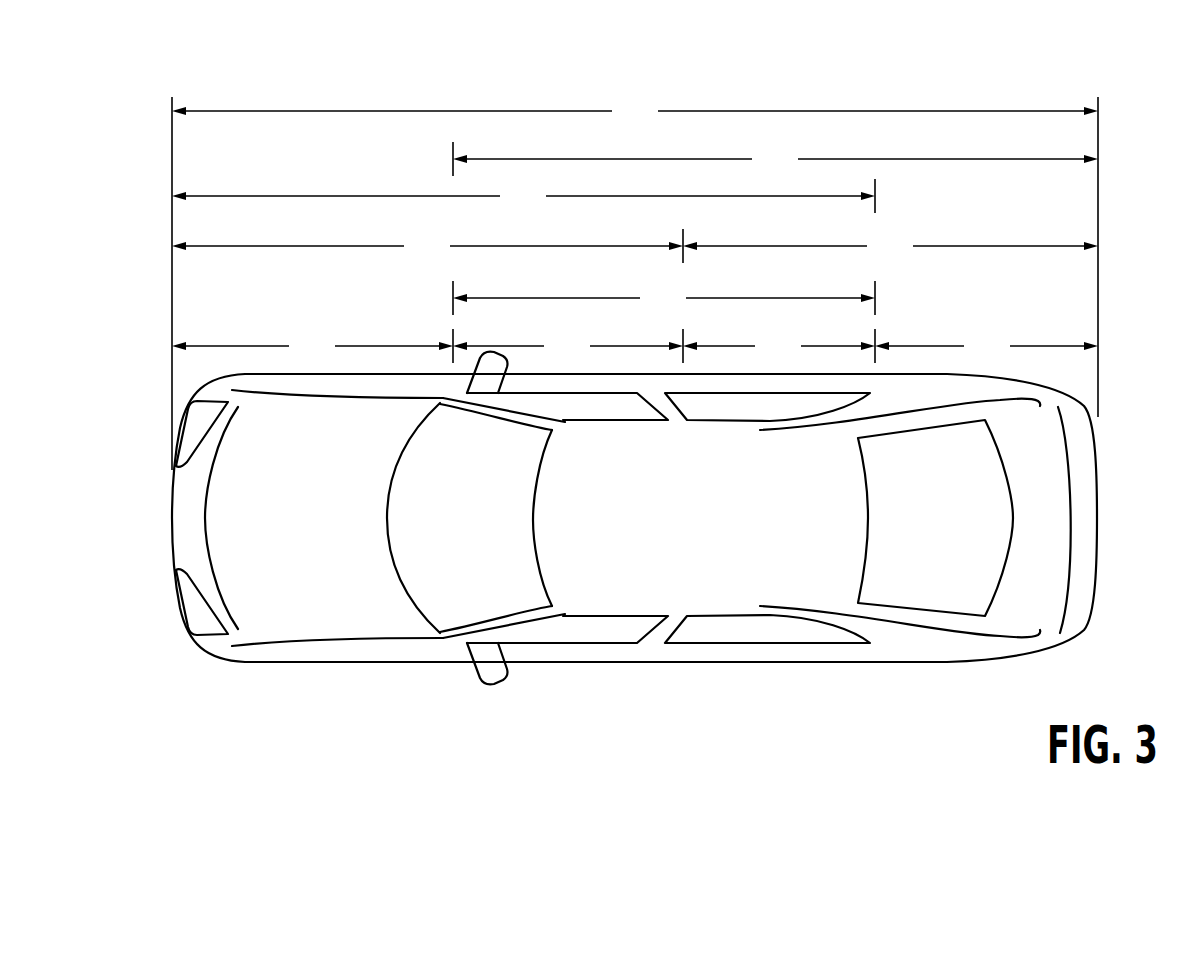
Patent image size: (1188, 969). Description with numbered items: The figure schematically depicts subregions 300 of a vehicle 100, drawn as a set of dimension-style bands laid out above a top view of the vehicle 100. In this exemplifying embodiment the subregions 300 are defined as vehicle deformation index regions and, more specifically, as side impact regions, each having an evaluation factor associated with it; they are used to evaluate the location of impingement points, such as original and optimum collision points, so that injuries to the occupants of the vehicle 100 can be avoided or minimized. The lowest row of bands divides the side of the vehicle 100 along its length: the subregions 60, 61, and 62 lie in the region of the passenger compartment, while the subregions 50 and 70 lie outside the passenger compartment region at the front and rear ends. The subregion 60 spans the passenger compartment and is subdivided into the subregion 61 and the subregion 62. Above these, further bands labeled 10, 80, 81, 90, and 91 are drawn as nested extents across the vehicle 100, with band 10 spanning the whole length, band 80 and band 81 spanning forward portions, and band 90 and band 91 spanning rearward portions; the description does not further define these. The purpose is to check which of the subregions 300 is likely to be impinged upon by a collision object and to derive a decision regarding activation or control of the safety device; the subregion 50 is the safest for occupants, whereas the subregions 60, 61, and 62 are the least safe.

The subregions 300 is at (131, 138).
The vehicle 100 is at (133, 462).
The overall vehicle length 10 is at (635, 111).
The rear vehicle section length 90 is at (775, 159).
The front vehicle section length 80 is at (523, 196).
The front half length 81 is at (427, 246).
The rear half length 91 is at (890, 246).
The subregion 60 is at (664, 298).
The subregion 50 is at (312, 346).
The subregion 61 is at (568, 346).
The subregion 62 is at (779, 346).
The subregion 70 is at (986, 346).